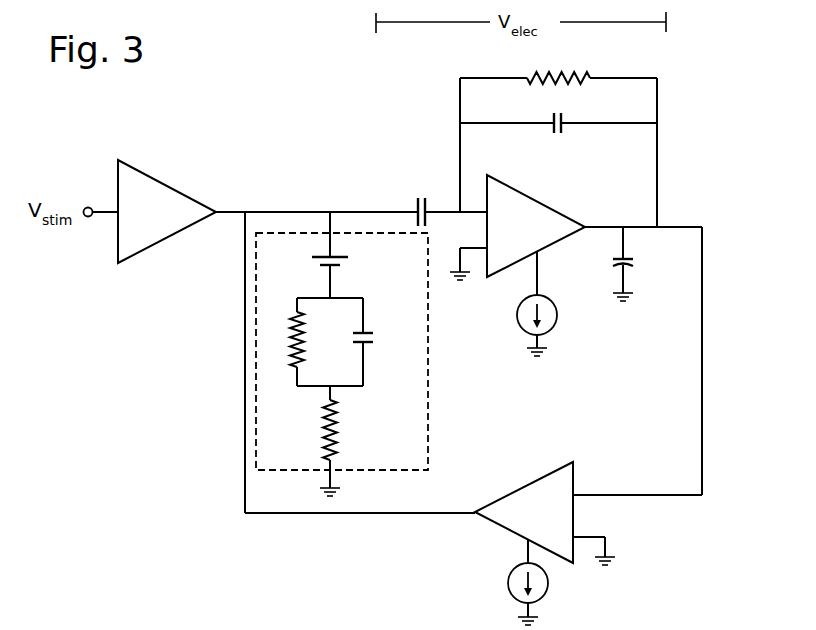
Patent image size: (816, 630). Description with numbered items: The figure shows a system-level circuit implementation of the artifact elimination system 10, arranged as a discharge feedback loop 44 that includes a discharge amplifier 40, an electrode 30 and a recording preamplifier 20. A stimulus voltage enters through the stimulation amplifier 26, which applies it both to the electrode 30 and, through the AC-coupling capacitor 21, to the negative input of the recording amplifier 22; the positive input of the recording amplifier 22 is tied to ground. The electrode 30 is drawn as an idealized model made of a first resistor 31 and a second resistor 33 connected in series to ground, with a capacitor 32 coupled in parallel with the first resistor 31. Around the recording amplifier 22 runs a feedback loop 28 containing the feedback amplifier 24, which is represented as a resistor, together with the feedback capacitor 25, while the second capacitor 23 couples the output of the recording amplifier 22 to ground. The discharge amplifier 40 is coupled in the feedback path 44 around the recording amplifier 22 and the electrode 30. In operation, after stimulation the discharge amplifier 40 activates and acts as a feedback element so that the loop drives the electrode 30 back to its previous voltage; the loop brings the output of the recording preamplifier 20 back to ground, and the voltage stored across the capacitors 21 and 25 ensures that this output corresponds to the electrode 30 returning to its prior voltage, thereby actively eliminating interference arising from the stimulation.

The artifact elimination system 10 is at (246, 96).
The recording preamplifier 20 is at (748, 180).
The capacitor 21 is at (412, 207).
The recording amplifier 22 is at (537, 200).
The second capacitor 23 is at (613, 266).
The feedback amplifier 24 is at (527, 84).
The feedback capacitor 25 is at (563, 116).
The stimulation amplifier 26 is at (181, 186).
The feedback loop 28 is at (598, 130).
The electrode 30 is at (359, 365).
The first resistor 31 is at (306, 323).
The capacitor 32 is at (368, 347).
The second resistor 33 is at (324, 430).
The discharge amplifier 40 is at (511, 492).
The discharge feedback loop 44 is at (726, 344).